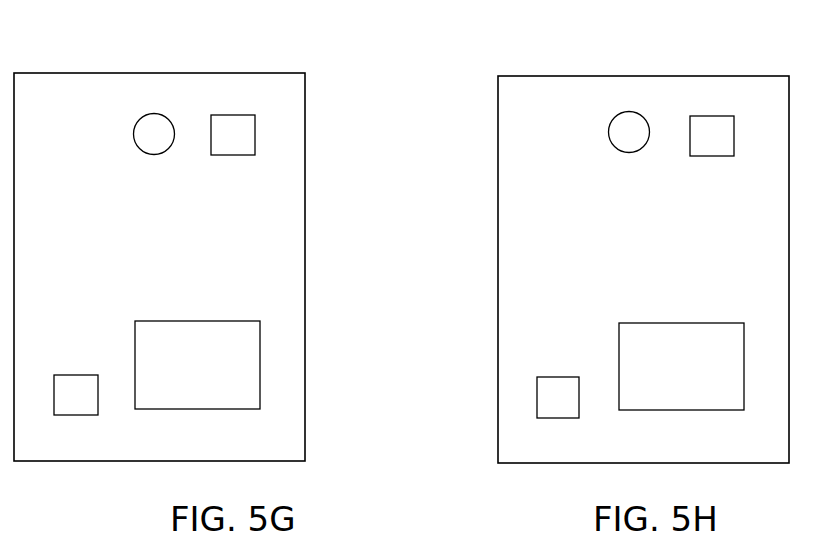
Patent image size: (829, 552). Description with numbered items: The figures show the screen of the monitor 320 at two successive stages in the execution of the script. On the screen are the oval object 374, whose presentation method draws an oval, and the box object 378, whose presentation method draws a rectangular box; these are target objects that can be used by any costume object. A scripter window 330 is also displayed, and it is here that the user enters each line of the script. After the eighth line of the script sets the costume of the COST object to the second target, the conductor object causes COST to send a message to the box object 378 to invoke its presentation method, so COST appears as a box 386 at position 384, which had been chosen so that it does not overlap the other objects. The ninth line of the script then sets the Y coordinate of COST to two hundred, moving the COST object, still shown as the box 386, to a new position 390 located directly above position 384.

In FIG. 5G, the monitor 320 is at (305, 173).
In FIG. 5H, the monitor 320 is at (498, 259).
In FIG. 5G, the oval object 374 is at (155, 113).
In FIG. 5H, the oval object 374 is at (631, 112).
In FIG. 5G, the box object 378 is at (233, 115).
In FIG. 5H, the box object 378 is at (712, 116).
In FIG. 5G, the text window 330 is at (236, 321).
In FIG. 5H, the text window 330 is at (719, 323).
In FIG. 5G, the new position 384 is at (80, 388).
In FIG. 5G, the box 386 is at (68, 415).
In FIG. 5H, the box 386 is at (537, 405).
In FIG. 5H, the new position 390 is at (550, 393).